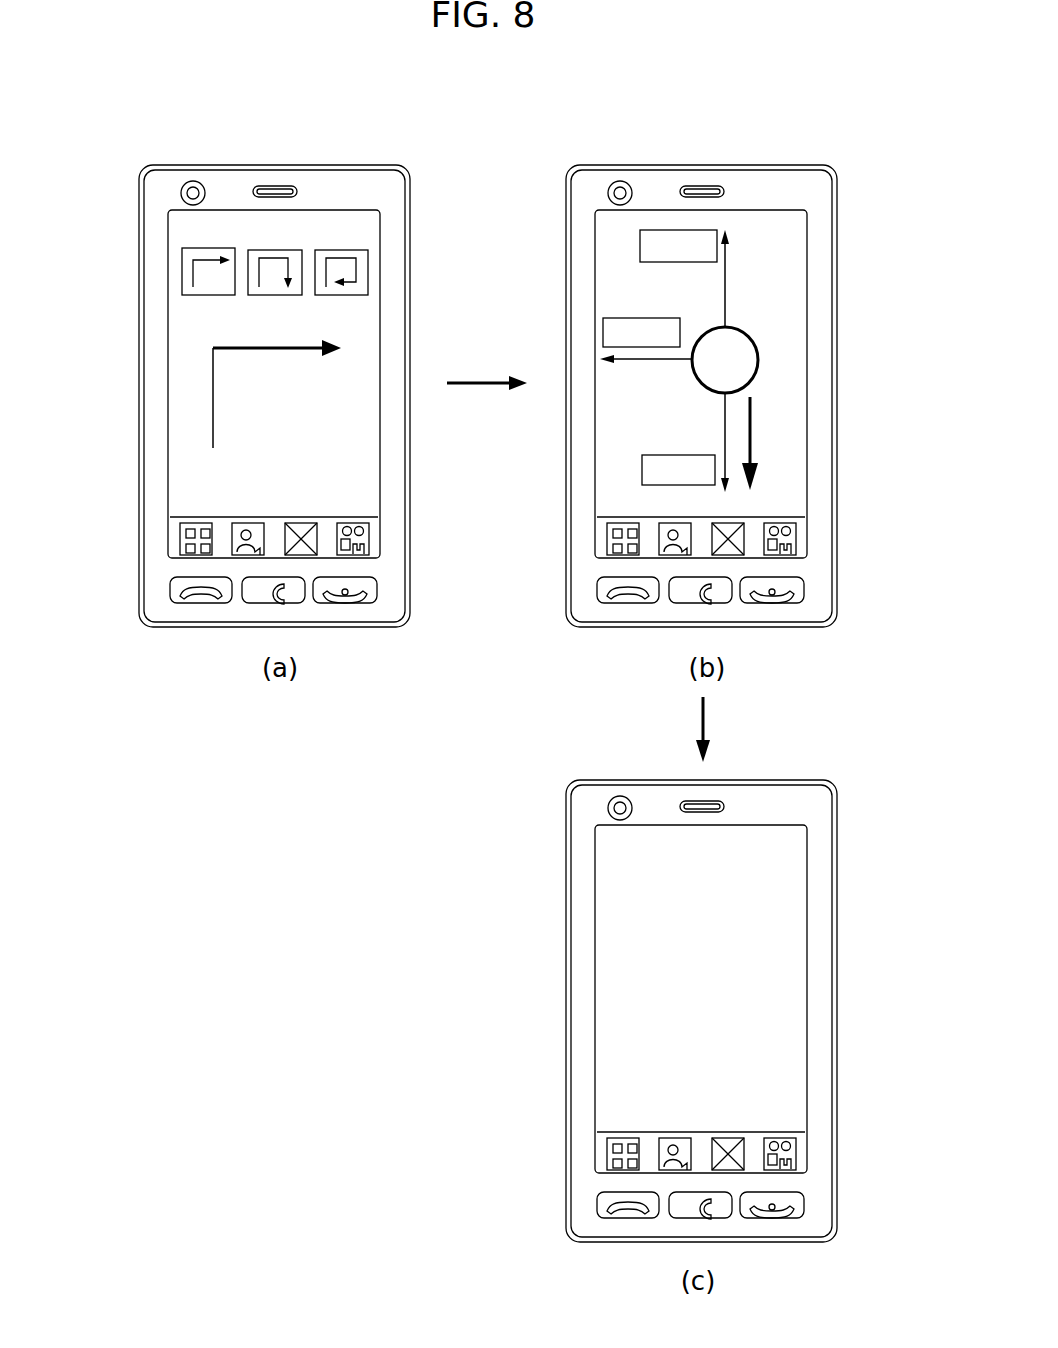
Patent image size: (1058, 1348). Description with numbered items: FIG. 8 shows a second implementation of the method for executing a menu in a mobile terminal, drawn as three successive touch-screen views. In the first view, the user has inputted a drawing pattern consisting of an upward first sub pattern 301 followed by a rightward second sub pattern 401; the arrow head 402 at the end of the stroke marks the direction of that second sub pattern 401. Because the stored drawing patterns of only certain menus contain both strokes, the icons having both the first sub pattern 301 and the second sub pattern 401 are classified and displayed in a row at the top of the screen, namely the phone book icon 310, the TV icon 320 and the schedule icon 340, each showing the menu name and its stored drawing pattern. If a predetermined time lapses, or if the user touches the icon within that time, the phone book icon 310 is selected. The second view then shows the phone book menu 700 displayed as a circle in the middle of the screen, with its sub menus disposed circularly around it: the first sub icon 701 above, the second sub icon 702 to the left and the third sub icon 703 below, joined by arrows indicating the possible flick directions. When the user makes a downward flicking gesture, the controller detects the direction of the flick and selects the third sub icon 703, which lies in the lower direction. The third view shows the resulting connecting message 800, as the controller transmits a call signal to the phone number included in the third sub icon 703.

The phone book icon 310 is at (183, 258).
The TV icon 320 is at (250, 248).
The schedule icon 340 is at (368, 262).
The second sub pattern 401 is at (287, 352).
The trace arrow head 402 is at (338, 345).
The first sub pattern 301 is at (213, 422).
The phone book menu 700 is at (758, 357).
The first sub icon 701 is at (670, 230).
The second sub icon 702 is at (603, 328).
The third sub icon 703 is at (642, 468).
The connecting message 800 is at (610, 948).